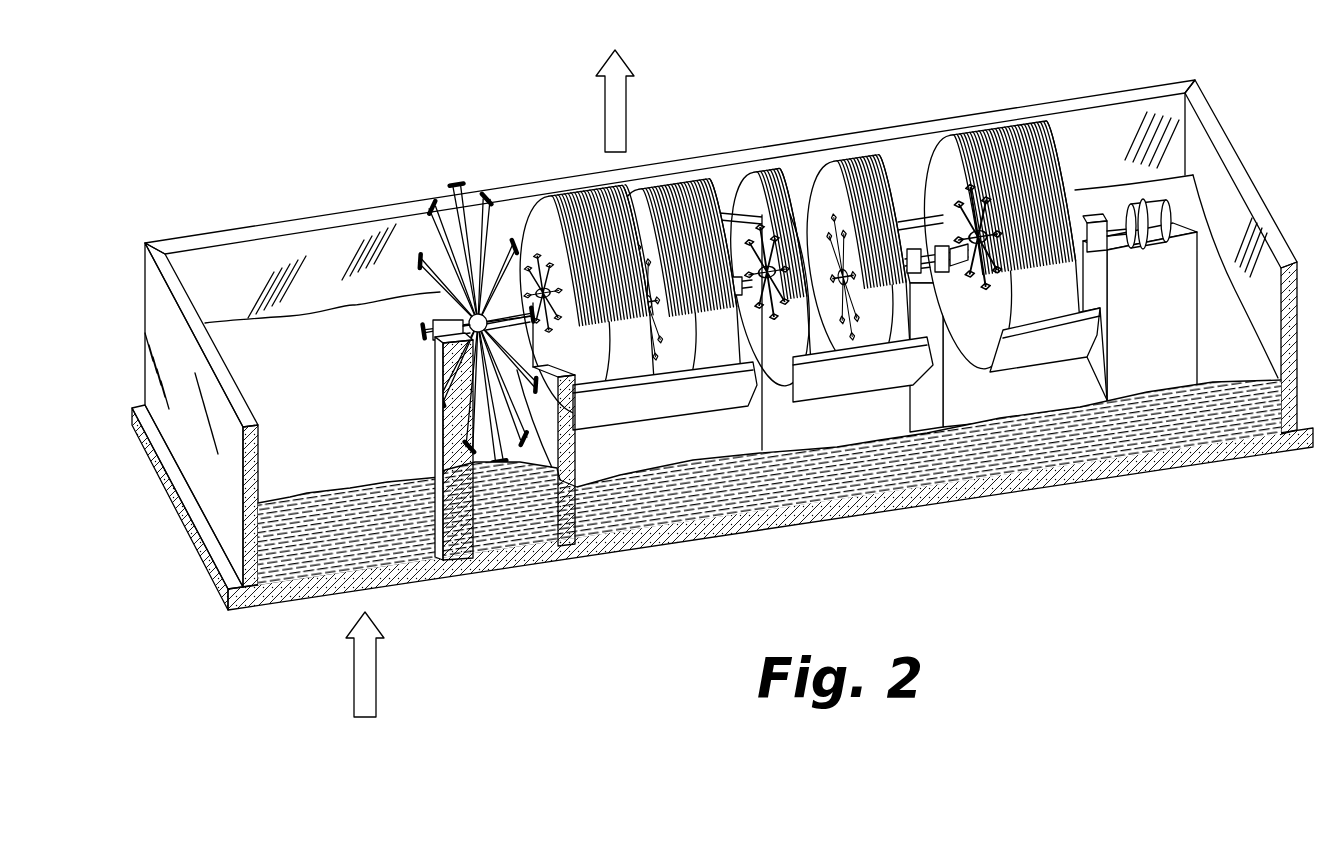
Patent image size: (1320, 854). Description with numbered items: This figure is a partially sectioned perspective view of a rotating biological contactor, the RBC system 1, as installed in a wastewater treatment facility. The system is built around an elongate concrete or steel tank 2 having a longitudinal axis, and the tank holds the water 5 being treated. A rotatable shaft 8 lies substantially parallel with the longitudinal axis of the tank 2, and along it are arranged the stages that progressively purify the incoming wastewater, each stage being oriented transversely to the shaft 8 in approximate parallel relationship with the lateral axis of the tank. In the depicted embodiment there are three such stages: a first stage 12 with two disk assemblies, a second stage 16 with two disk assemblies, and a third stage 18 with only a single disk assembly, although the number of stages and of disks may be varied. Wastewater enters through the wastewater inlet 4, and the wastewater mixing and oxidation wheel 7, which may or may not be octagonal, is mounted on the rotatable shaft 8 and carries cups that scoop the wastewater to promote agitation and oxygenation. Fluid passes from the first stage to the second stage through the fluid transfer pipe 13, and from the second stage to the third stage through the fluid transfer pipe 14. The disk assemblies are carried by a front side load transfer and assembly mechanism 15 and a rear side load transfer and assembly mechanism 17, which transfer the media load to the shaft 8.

The RBC system 1 is at (522, 572).
The elongate tank 2 is at (190, 415).
The wastewater inlet 4 is at (513, 262).
The water 5 is at (973, 400).
The wastewater mixing and oxidation wheel 7 is at (440, 237).
The rotatable shaft 8 is at (1097, 247).
The first stage 12 is at (580, 203).
The fluid transfer pipe from first stage to second stage 13 is at (843, 447).
The fluid transfer pipe from second stage to third stage 14 is at (920, 240).
The front side load transfer and assembly mechanism 15 is at (757, 227).
The second stage 16 is at (767, 173).
The rear side load transfer and assembly mechanism 17 is at (827, 220).
The third stage 18 is at (998, 137).